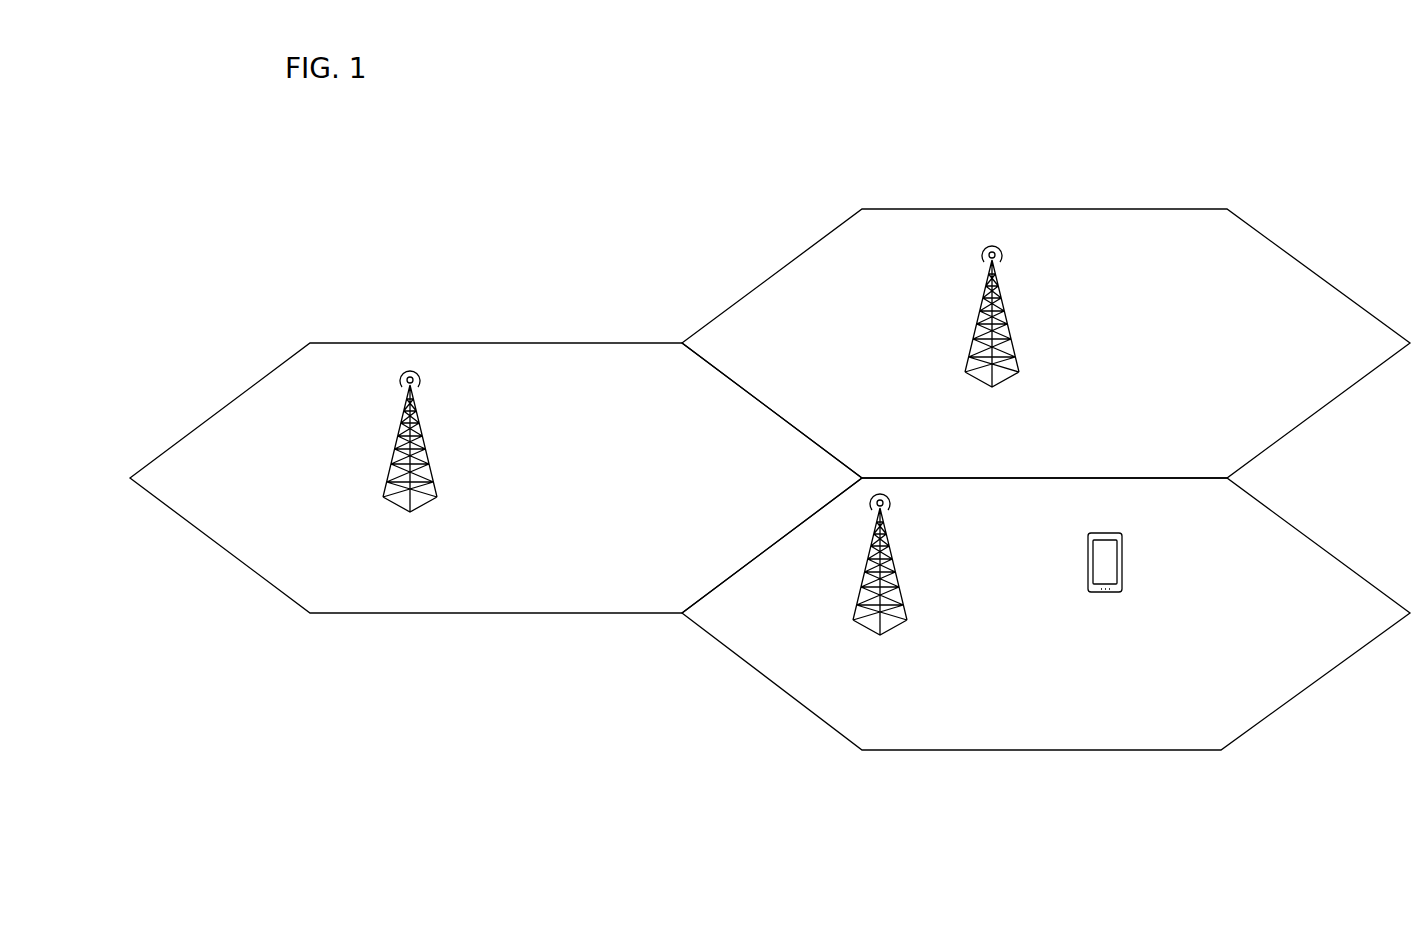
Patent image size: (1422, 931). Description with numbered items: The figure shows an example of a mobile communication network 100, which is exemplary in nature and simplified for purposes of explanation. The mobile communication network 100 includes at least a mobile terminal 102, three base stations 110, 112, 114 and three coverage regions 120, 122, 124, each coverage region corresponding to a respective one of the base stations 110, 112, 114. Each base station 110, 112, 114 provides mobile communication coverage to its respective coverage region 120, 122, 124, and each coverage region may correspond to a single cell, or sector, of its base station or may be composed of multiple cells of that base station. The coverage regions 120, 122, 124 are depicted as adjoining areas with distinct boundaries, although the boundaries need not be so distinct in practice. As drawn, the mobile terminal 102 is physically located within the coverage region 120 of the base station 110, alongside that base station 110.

The mobile communication network 100 is at (462, 154).
The mobile terminal 102 is at (1120, 530).
The base station 110 is at (880, 577).
The base station 112 is at (992, 329).
The base station 114 is at (410, 456).
The coverage region 120 is at (1221, 750).
The coverage region 122 is at (1127, 209).
The coverage region 124 is at (613, 343).